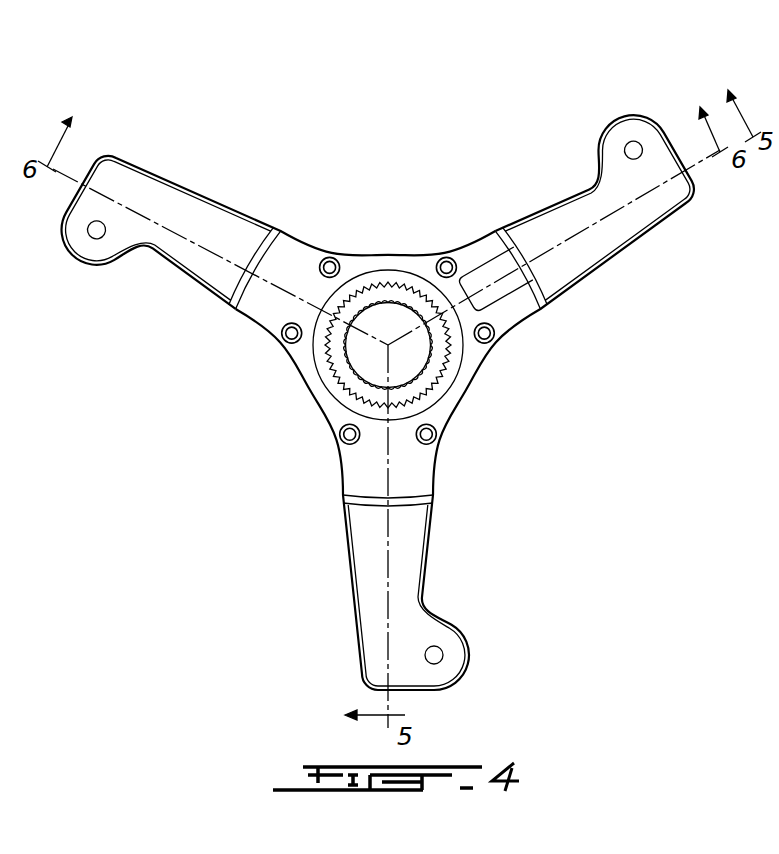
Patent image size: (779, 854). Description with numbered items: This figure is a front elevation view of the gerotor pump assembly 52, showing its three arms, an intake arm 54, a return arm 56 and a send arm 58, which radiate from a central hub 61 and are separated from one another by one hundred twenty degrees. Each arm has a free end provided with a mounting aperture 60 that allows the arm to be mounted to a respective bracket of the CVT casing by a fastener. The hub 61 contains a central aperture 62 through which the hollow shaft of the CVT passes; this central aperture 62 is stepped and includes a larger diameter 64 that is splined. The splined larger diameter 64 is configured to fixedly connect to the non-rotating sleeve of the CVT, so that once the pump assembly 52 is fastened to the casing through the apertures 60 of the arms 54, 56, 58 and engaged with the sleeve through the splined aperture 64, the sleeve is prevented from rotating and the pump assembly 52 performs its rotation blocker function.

The pump assembly 52 is at (458, 137).
The intake arm 54 is at (375, 624).
The return arm 56 is at (663, 200).
The send arm 58 is at (133, 231).
The mounting aperture 60 is at (85, 236).
The central hub 61 is at (292, 389).
The central aperture 62 is at (408, 353).
The splined larger diameter 64 is at (385, 284).